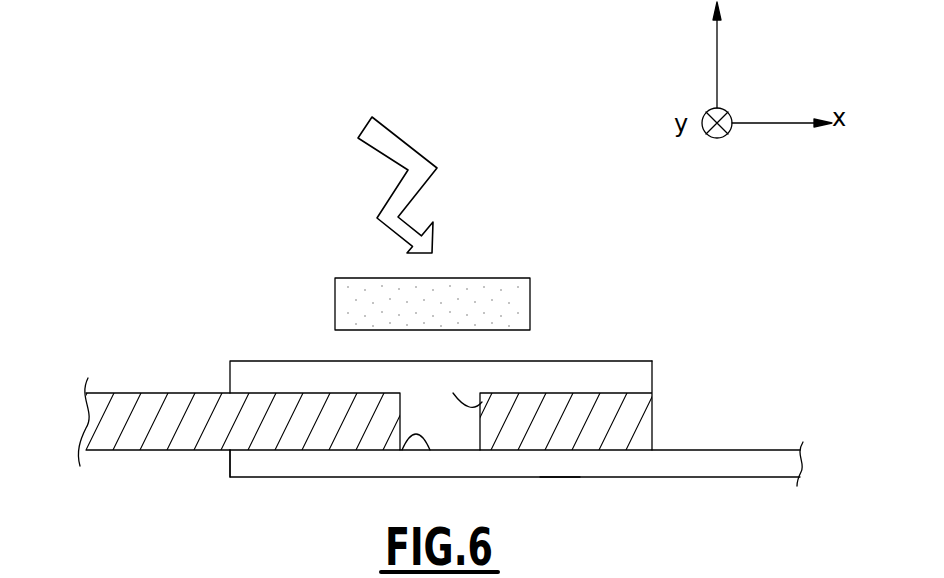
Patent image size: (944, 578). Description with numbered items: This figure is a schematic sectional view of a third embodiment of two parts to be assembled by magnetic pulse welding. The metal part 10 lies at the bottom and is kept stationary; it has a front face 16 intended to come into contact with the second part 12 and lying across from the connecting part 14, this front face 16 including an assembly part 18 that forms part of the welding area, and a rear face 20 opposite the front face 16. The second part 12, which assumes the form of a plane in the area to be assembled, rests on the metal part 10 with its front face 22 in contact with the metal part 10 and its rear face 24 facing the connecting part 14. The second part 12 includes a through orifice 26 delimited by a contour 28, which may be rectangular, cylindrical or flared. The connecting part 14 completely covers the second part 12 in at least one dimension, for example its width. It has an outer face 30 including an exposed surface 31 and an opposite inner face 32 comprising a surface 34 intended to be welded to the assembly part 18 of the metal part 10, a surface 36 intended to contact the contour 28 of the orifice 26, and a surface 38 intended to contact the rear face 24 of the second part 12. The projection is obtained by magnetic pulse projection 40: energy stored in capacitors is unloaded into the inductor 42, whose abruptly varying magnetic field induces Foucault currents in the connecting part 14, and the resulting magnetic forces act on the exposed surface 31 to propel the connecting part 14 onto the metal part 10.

The metal part 10 is at (802, 457).
The second part 12 is at (668, 427).
The connecting part 14 is at (612, 377).
The front face 16 is at (747, 450).
The assembly part 18 is at (405, 440).
The rear face 20 is at (553, 477).
The front face 22 is at (262, 453).
The rear face 24 is at (148, 393).
The through orifice 26 is at (458, 438).
The contour 28 is at (298, 404).
The outer face 30 is at (292, 361).
The exposed surface 31 is at (488, 358).
The inner face 32 is at (400, 412).
The surface 34 is at (483, 408).
The surface 36 is at (400, 400).
The surface 38 is at (652, 393).
The magnetic pulse projection 40 is at (511, 214).
The inductor 42 is at (335, 278).